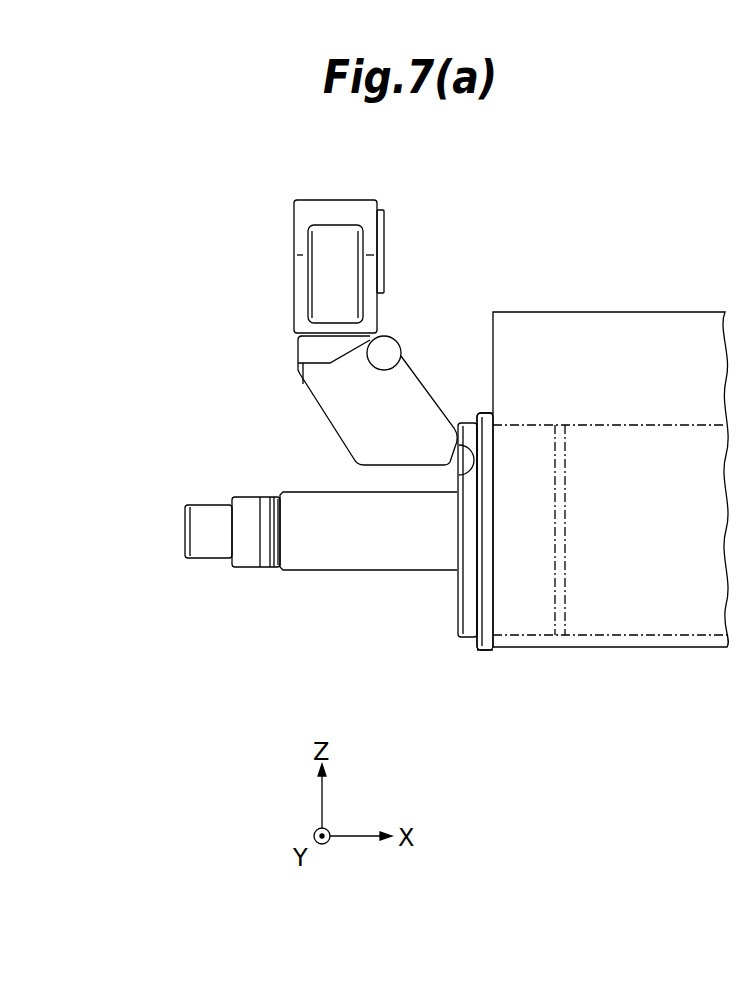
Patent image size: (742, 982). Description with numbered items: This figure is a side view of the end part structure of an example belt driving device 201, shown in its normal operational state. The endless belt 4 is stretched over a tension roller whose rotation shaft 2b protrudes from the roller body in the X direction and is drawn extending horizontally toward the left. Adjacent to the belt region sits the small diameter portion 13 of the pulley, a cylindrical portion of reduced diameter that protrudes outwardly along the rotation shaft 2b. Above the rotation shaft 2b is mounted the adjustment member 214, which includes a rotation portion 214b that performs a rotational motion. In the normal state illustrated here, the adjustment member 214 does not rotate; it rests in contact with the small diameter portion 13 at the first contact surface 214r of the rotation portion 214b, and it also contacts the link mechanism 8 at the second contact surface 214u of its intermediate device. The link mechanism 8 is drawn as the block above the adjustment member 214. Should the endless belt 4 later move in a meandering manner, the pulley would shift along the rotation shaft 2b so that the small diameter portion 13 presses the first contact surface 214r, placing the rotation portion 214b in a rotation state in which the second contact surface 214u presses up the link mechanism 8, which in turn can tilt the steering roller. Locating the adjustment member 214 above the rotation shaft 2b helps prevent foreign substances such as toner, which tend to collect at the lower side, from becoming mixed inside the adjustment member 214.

The belt driving device 201 is at (537, 259).
The link mechanism 8 is at (295, 213).
The adjustment member 214 is at (309, 395).
The second contact surface 214u is at (304, 333).
The rotation portion 214b is at (415, 400).
The first contact surface 214r is at (456, 480).
The small diameter portion 13 is at (466, 422).
The endless belt 4 is at (615, 312).
The rotation shaft 2b is at (327, 562).